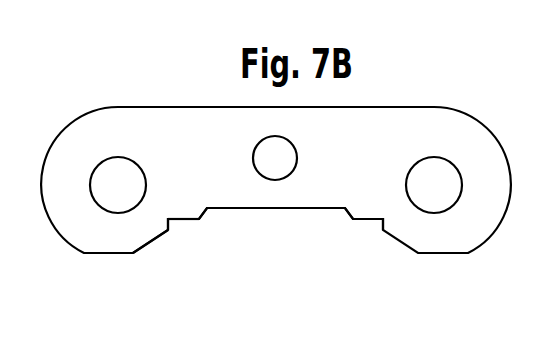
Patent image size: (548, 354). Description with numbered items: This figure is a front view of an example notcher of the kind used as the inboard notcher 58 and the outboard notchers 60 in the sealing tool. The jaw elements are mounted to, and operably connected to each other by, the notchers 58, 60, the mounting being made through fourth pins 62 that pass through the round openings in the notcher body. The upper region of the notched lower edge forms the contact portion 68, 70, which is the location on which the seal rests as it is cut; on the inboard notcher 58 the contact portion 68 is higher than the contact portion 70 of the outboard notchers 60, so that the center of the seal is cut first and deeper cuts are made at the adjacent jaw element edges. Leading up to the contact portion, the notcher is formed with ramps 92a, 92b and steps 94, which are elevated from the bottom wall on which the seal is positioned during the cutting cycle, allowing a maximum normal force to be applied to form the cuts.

The inboard notcher 58 is at (276, 174).
The outboard notcher 60 is at (276, 192).
The fourth pin 62 is at (115, 170).
The contact portion 68 is at (258, 256).
The contact portion 70 is at (258, 256).
The ramp 92a is at (201, 219).
The ramp 92b is at (155, 242).
The step 94 is at (183, 221).